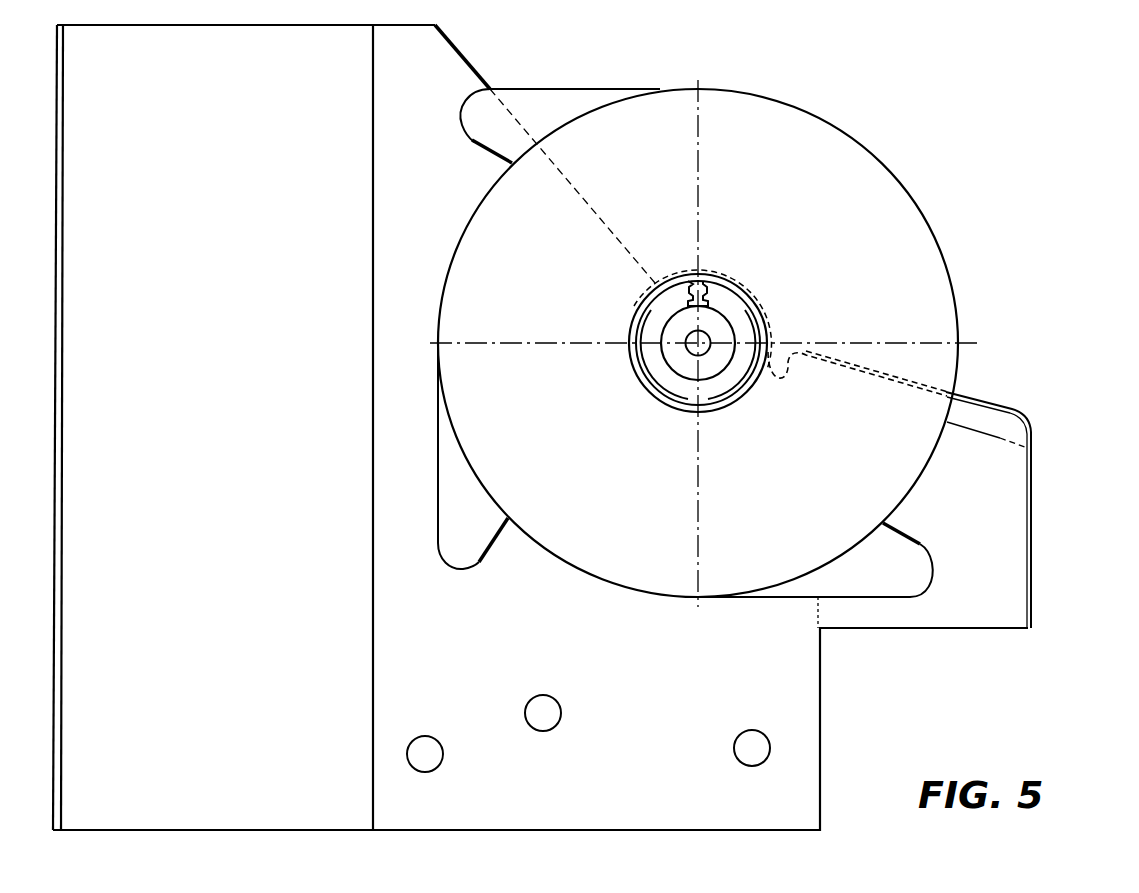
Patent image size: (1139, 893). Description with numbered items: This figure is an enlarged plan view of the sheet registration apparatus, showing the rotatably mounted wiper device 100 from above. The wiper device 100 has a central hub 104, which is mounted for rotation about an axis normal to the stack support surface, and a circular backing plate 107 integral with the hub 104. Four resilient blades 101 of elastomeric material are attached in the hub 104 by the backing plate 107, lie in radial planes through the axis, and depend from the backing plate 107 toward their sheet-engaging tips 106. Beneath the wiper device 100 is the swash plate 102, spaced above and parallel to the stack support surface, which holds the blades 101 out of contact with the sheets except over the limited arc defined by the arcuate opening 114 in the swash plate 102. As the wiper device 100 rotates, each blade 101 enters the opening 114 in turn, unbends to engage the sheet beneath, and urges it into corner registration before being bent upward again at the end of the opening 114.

The wiper device 100 is at (945, 223).
The resilient blades 101 is at (551, 88).
The swash plate 102 is at (998, 530).
The hub 104 is at (727, 272).
The sheet-engaging tips 106 is at (455, 568).
The circular backing plate 107 is at (670, 342).
The arcuate opening 114 is at (980, 400).